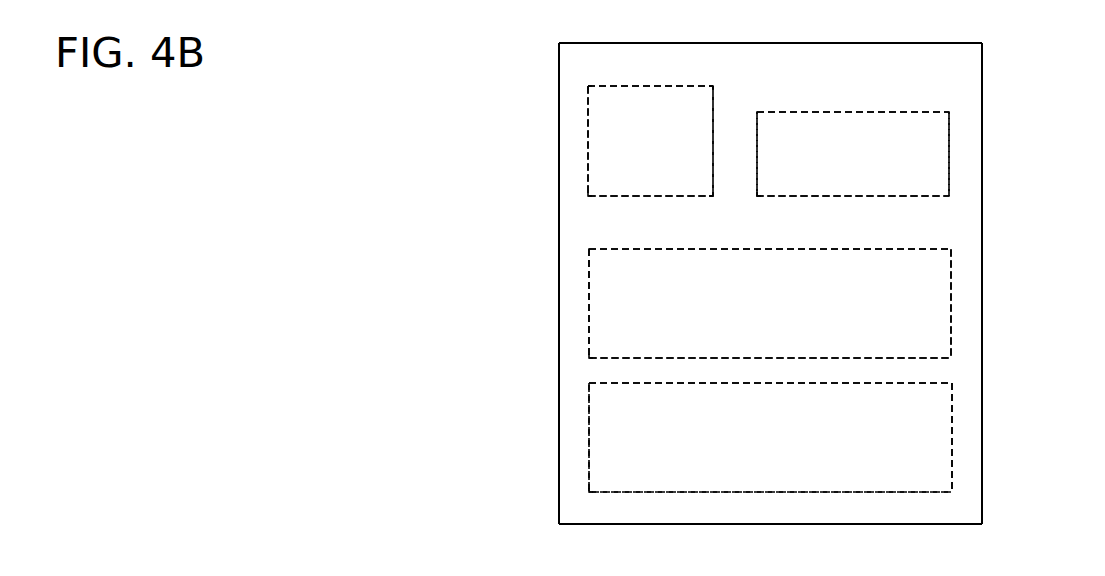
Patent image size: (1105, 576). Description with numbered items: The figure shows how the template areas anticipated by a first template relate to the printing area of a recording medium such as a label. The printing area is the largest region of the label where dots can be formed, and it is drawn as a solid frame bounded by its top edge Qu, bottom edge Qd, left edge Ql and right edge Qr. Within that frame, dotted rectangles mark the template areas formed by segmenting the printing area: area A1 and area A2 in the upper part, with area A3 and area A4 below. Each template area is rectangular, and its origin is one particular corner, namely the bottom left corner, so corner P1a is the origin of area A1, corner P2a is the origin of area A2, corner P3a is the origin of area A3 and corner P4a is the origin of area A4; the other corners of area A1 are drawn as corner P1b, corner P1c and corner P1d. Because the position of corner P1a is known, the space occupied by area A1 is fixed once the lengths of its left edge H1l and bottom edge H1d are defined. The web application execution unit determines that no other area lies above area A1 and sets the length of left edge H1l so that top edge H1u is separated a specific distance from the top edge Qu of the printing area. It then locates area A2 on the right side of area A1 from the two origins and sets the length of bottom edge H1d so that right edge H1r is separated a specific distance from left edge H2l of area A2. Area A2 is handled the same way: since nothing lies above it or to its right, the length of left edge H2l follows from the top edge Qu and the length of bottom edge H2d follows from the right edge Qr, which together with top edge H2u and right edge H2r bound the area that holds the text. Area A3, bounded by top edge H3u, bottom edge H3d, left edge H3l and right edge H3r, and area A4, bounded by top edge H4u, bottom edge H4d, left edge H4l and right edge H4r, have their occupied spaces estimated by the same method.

The top edge of the printing area Qu is at (732, 43).
The lower edge of screen region Q Qd is at (915, 524).
The left edge of screen region Q Ql is at (559, 237).
The right edge of the printing area Qr is at (982, 237).
The area A1 is at (620, 86).
The top edge of area A1 H1u is at (636, 86).
The bottom edge of area A1 H1d is at (632, 196).
The left edge of area A1 H1l is at (588, 155).
The right edge of area A1 H1r is at (713, 135).
The corner P1a is at (590, 195).
The upper-left vertex of region A1 P1b is at (590, 88).
The lower-right vertex of region A1 P1c is at (712, 195).
The upper-right vertex of region A1 P1d is at (711, 88).
The area A2 is at (949, 162).
The upper side of region A2 H2u is at (870, 112).
The bottom edge of area A2 H2d is at (840, 196).
The left edge of area A2 H2l is at (757, 128).
The right side of region A2 H2r is at (949, 125).
The corner P2a is at (757, 196).
The area A3 is at (951, 325).
The upper side of region A3 H3u is at (757, 249).
The lower side of region A3 H3d is at (740, 358).
The left side of region A3 H3l is at (589, 305).
The right side of region A3 H3r is at (951, 280).
The corner P3a is at (589, 358).
The area A4 is at (952, 455).
The upper side of region A4 H4u is at (749, 383).
The lower side of region A4 H4d is at (712, 492).
The left side of region A4 H4l is at (589, 425).
The right side of region A4 H4r is at (952, 425).
The corner P4a is at (589, 492).